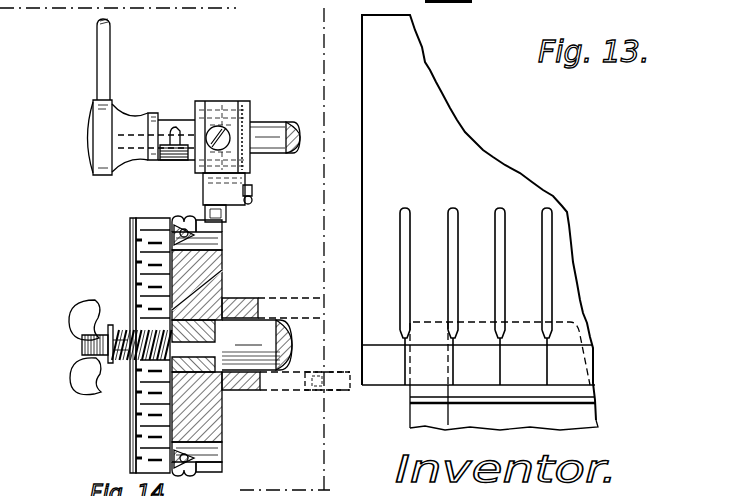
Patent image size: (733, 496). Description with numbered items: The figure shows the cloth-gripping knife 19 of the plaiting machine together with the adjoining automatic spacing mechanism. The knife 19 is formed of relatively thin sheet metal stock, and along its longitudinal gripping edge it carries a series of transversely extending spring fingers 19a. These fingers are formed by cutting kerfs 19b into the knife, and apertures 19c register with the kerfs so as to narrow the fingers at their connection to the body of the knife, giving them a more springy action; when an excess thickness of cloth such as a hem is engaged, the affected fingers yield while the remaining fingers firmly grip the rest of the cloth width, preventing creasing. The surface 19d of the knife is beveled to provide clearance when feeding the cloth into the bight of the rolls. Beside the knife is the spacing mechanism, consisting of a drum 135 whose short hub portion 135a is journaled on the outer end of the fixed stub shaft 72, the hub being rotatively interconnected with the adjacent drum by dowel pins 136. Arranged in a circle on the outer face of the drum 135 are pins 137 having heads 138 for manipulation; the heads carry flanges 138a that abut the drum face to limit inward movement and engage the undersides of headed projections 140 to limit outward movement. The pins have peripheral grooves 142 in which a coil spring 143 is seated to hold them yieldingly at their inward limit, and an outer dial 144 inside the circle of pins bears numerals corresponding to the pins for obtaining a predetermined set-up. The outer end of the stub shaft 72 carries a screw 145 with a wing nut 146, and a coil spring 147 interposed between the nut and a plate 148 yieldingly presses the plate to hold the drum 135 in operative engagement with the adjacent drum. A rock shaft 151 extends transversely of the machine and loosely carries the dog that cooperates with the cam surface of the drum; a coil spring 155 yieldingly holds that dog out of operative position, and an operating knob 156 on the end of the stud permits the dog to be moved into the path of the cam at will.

The cloth-gripping knife 19 is at (477, 172).
The spring fingers 19a is at (525, 290).
The kerfs 19b is at (502, 358).
The apertures 19c is at (500, 212).
The upper surface 19d is at (574, 366).
The fixed stub shaft 72 is at (256, 360).
The drum 135 is at (222, 262).
The hub portion 135a is at (245, 301).
The dowel pins 136 is at (314, 390).
The pins 137 is at (236, 230).
The heads 138 is at (135, 270).
The flanges 138a is at (172, 225).
The headed projections 140 is at (137, 286).
The peripheral grooves 142 is at (226, 246).
The coil spring 143 is at (185, 221).
The outer dial 144 is at (137, 395).
The screw 145 is at (138, 373).
The wing nut 146 is at (80, 368).
The coil spring 147 is at (114, 325).
The plate 148 is at (215, 284).
The rock shaft 151 is at (275, 122).
The coil spring 155 is at (248, 170).
The operating knob 156 is at (104, 122).